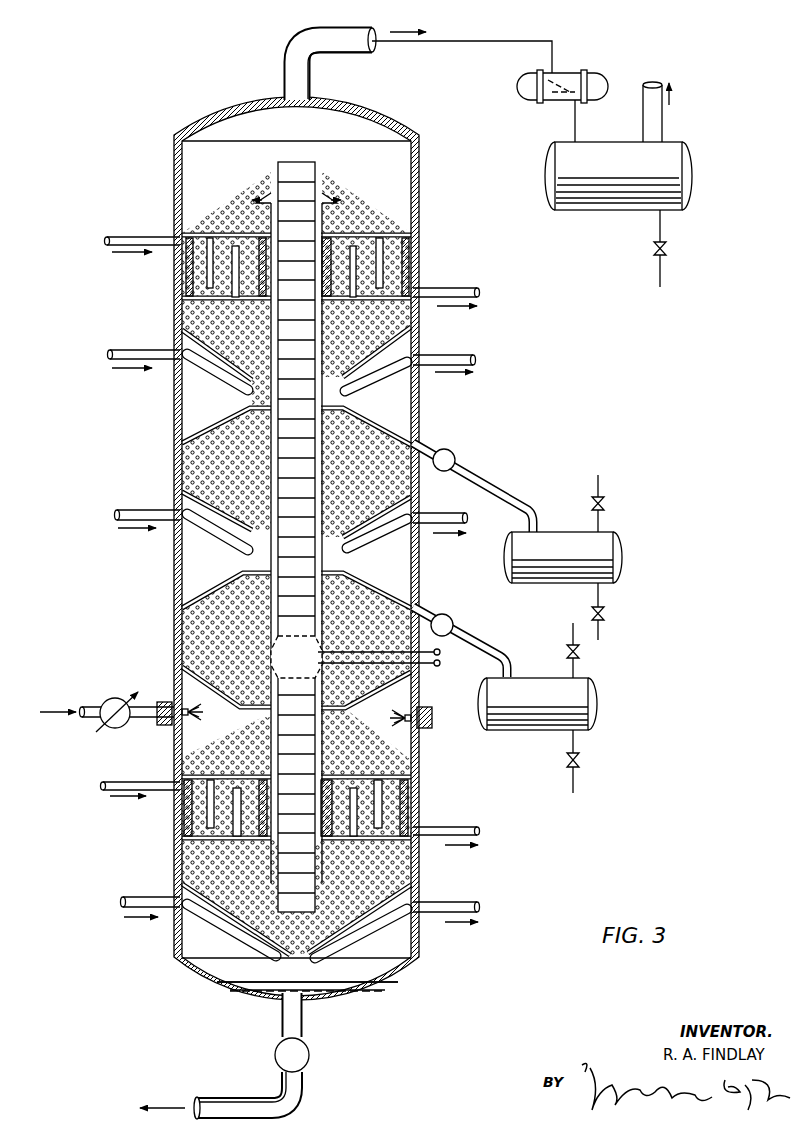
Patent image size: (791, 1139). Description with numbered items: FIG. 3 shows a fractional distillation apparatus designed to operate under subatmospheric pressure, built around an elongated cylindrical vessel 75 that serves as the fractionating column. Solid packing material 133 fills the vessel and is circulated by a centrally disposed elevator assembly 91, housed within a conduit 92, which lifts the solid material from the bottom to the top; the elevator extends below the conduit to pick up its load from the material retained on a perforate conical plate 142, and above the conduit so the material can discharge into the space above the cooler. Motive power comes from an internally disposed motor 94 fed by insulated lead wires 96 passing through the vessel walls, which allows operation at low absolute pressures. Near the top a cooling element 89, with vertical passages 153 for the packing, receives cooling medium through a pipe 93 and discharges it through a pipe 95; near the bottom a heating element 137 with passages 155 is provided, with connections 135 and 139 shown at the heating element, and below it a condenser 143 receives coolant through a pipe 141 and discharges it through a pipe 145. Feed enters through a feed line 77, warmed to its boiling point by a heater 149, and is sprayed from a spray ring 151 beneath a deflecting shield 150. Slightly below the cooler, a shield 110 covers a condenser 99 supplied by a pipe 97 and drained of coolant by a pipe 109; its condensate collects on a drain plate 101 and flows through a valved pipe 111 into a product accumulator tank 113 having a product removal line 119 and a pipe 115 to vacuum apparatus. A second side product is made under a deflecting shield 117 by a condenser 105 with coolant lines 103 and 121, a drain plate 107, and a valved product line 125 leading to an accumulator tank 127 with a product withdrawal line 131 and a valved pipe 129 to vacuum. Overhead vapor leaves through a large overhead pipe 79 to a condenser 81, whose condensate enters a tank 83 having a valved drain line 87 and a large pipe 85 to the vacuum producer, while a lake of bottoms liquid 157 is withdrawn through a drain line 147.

The elongated cylindrical vessel 75 is at (174, 150).
The feed line 77 is at (150, 722).
The overhead pipe 79 is at (284, 52).
The condenser 81 is at (566, 73).
The tank 83 is at (607, 205).
The pipe 85 is at (663, 126).
The valved drain line 87 is at (662, 270).
The cooling element 89 is at (382, 262).
The elevator assembly 91 is at (286, 458).
The conduit 92 is at (273, 480).
The pipe 93 is at (130, 237).
The internally disposed motor 94 is at (318, 648).
The pipe 95 is at (452, 290).
The lead wires 96 is at (440, 665).
The pipe 97 is at (128, 350).
The condenser 99 is at (218, 378).
The drain plate 101 is at (203, 431).
The line 103 is at (133, 510).
The condenser 105 is at (227, 540).
The drain plate 107 is at (203, 596).
The pipe 109 is at (460, 356).
The shield 110 is at (400, 347).
The valved pipe 111 is at (487, 482).
The product accumulator tank 113 is at (552, 578).
The pipe 115 is at (600, 483).
The solid packing material deflecting shield 117 is at (370, 528).
The product removal line 119 is at (601, 632).
The line 121 is at (440, 513).
The valved product line 125 is at (490, 645).
The accumulator tank 127 is at (520, 724).
The valved pipe 129 is at (576, 668).
The product withdrawal line 131 is at (575, 780).
The solid packing material 133 is at (363, 210).
The inlet conduit 135 is at (130, 782).
The heating element 137 is at (182, 813).
The outlet conduit 139 is at (453, 827).
The pipe 141 is at (140, 897).
The perforate conical plate 142 is at (353, 920).
The condenser 143 is at (232, 932).
The pipe 145 is at (458, 902).
The drain line 147 is at (298, 1103).
The heater 149 is at (108, 698).
The shield 150 is at (197, 677).
The spray ring 151 is at (393, 728).
The vertical passages 153 is at (200, 277).
The passages 155 is at (390, 803).
The liquid 157 is at (330, 997).